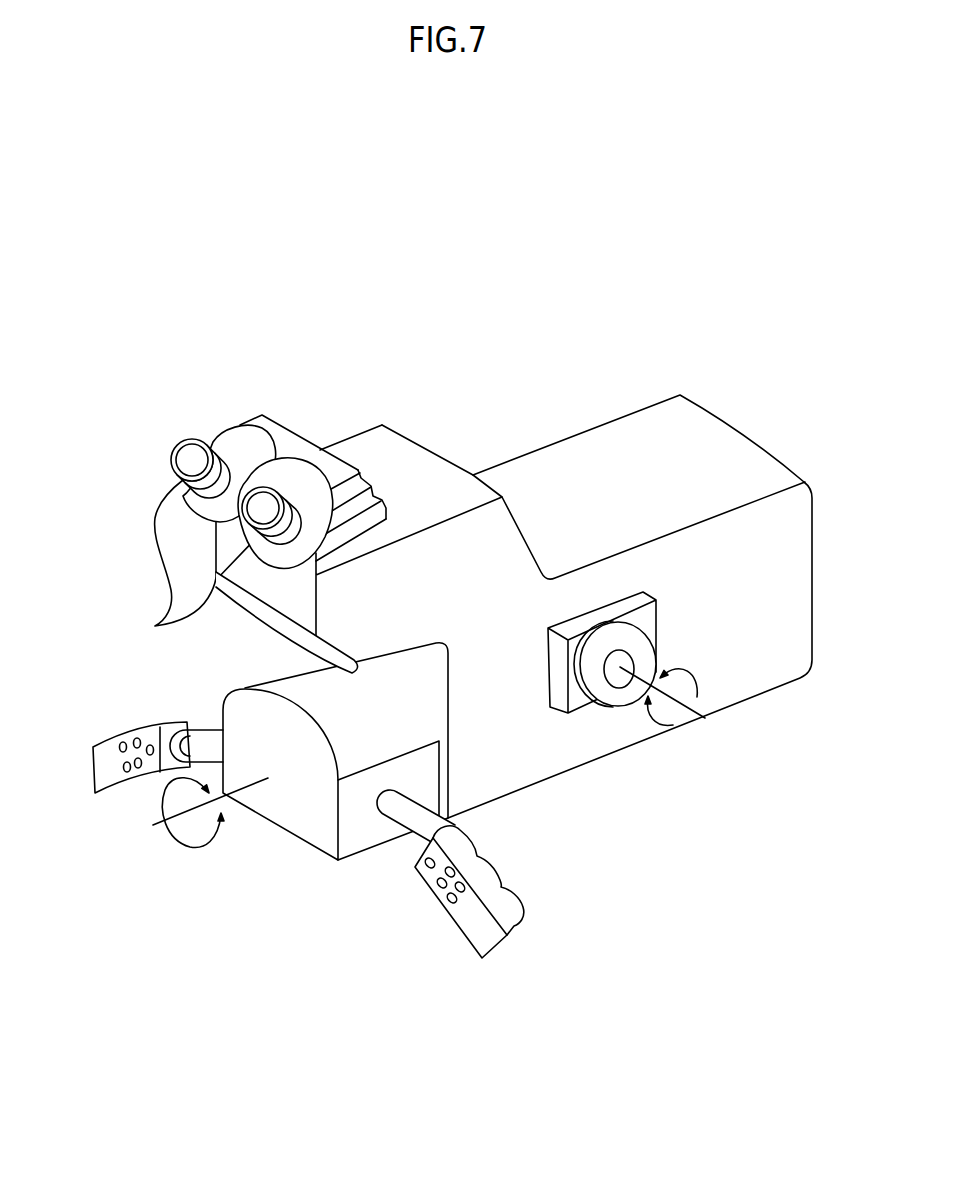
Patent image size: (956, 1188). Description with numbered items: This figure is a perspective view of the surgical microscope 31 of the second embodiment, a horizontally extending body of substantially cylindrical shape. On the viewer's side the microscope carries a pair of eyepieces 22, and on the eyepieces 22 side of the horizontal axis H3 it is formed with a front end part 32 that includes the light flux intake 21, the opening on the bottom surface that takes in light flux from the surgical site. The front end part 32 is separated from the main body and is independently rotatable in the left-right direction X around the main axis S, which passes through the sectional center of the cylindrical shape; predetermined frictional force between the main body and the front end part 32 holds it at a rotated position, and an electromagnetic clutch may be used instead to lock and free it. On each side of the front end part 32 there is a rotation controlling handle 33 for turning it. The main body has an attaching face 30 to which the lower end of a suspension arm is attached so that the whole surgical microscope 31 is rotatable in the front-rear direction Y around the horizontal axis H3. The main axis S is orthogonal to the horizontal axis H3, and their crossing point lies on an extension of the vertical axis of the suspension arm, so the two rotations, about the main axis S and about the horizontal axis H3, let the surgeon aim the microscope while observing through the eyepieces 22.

The light flux intake 21 is at (277, 828).
The eyepieces 22 is at (156, 626).
The attaching face 30 is at (647, 645).
The surgical microscope 31 is at (534, 380).
The front end part 32 is at (410, 713).
The rotation controlling handle 33 is at (110, 738).
The main axis S is at (199, 811).
The left-right direction X is at (185, 848).
The front-rear direction Y is at (673, 724).
The horizontal axis H3 is at (682, 710).